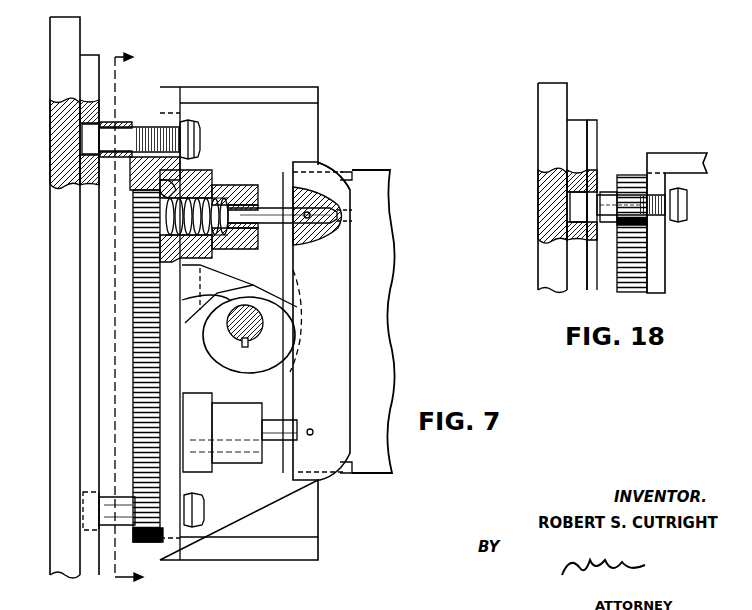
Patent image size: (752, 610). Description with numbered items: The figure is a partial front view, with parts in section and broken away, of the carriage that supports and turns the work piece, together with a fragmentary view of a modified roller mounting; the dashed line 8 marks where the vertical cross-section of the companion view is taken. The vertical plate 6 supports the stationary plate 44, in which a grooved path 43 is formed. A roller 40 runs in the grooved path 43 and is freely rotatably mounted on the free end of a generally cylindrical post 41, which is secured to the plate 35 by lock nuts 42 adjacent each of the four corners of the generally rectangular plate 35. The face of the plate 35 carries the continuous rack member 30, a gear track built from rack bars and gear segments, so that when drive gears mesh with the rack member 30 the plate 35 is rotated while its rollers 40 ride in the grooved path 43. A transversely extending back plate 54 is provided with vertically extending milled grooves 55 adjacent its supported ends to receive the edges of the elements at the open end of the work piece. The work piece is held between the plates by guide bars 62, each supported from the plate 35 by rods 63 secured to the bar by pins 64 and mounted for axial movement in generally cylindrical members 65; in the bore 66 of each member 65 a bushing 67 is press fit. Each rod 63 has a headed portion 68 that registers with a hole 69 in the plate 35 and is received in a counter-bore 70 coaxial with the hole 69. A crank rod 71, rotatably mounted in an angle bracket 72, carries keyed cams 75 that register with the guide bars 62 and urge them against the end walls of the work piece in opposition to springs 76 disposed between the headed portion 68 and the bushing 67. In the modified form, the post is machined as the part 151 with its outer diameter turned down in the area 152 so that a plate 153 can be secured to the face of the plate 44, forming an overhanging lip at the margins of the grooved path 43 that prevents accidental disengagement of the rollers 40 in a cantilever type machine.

In FIG. 18, the vertical plate 6 is at (547, 100).
In FIG. 7, the section line 8— 8 is at (136, 318).
In FIG. 7, the continuous rack member 30 is at (152, 374).
In FIG. 7, the plate 35 is at (178, 492).
In FIG. 7, the roller 40 is at (88, 137).
In FIG. 18, the roller 40 is at (578, 198).
In FIG. 7, the cylindrical post 41 is at (122, 128).
In FIG. 7, the lock nut 42 is at (200, 148).
In FIG. 18, the lock nut 42 is at (690, 215).
In FIG. 7, the grooved path 43 is at (100, 158).
In FIG. 18, the grooved path 43 is at (582, 212).
In FIG. 7, the stationary plate 44 is at (90, 65).
In FIG. 18, the stationary plate 44 is at (575, 126).
In FIG. 7, the back plate 54 is at (380, 270).
In FIG. 7, the milled groove 55 is at (335, 165).
In FIG. 7, the guide bar 62 is at (340, 352).
In FIG. 7, the rod 63 is at (288, 232).
In FIG. 7, the pin 64 is at (310, 224).
In FIG. 7, the cylindrical member 65 is at (240, 186).
In FIG. 7, the bore 66 is at (248, 249).
In FIG. 7, the bushing 67 is at (258, 205).
In FIG. 7, the headed portion 68 is at (160, 211).
In FIG. 7, the hole 69 is at (178, 180).
In FIG. 7, the counter-bore 70 is at (212, 250).
In FIG. 7, the crank rod 71 is at (252, 313).
In FIG. 7, the angle bracket 72 is at (193, 287).
In FIG. 7, the cam 75 is at (248, 356).
In FIG. 7, the spring 76 is at (160, 243).
In FIG. 18, the modified post 151 is at (607, 195).
In FIG. 18, the turned-down area 152 is at (633, 242).
In FIG. 18, the retaining plate 153 is at (594, 142).